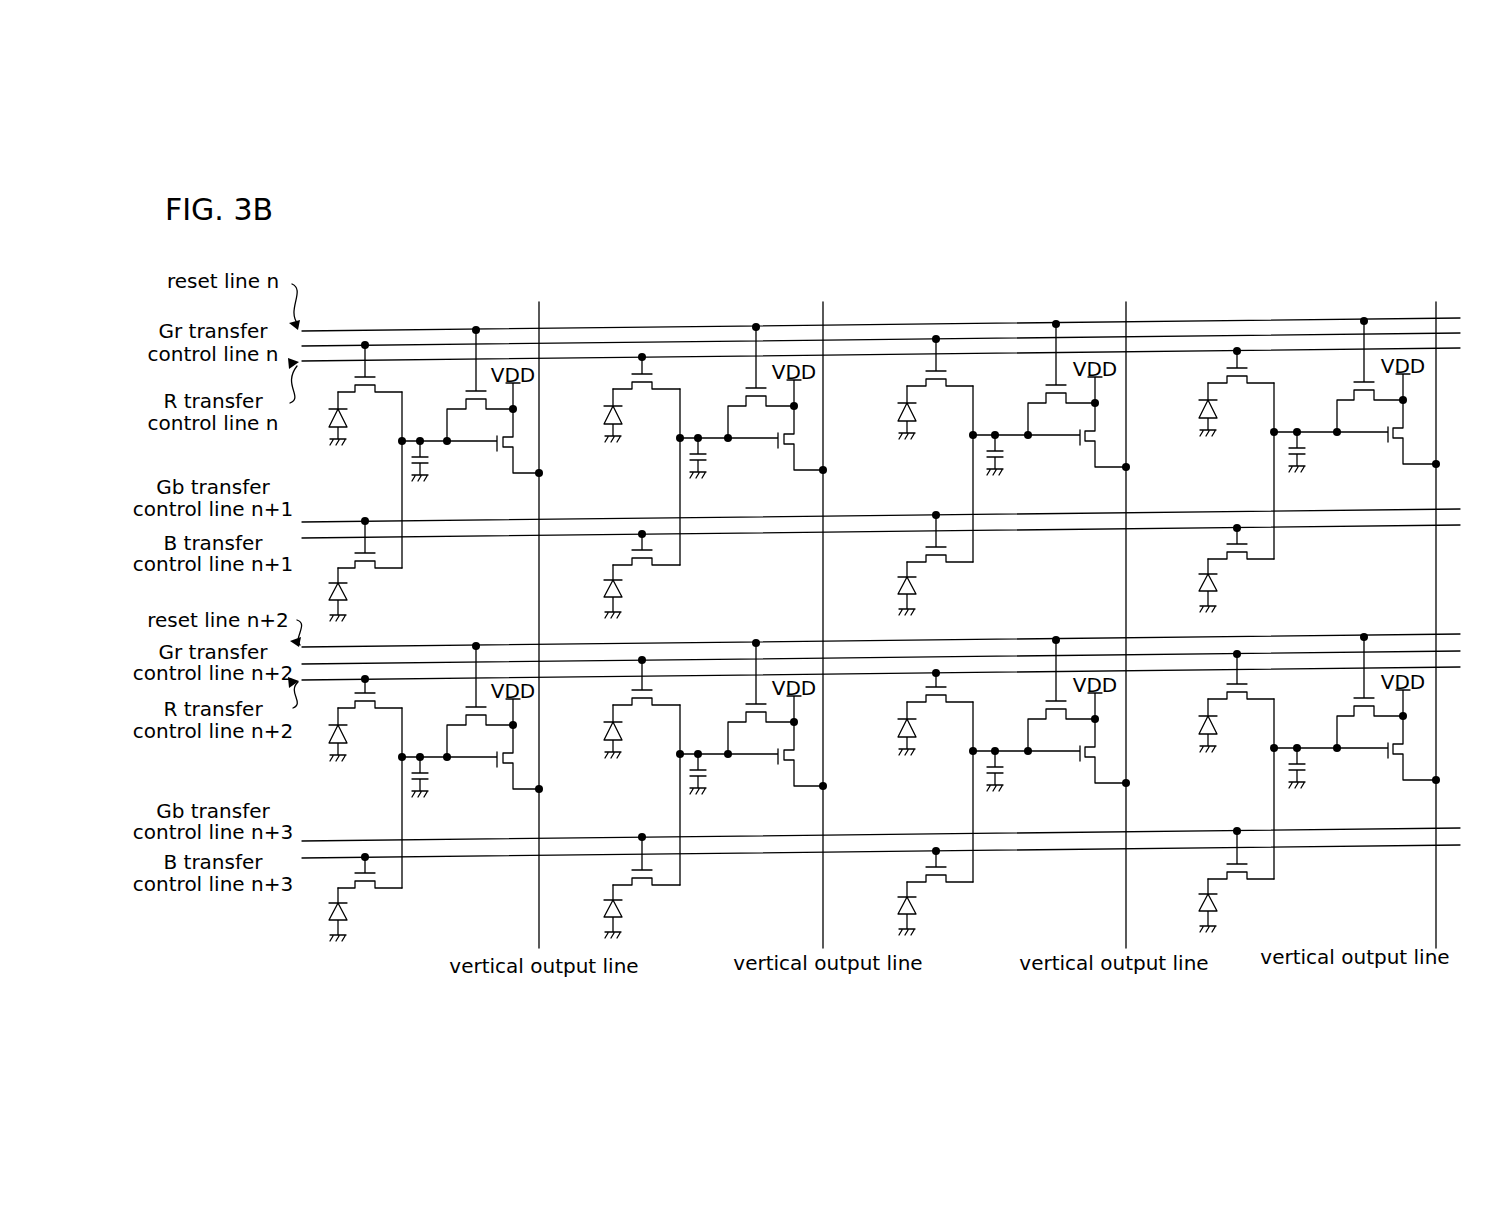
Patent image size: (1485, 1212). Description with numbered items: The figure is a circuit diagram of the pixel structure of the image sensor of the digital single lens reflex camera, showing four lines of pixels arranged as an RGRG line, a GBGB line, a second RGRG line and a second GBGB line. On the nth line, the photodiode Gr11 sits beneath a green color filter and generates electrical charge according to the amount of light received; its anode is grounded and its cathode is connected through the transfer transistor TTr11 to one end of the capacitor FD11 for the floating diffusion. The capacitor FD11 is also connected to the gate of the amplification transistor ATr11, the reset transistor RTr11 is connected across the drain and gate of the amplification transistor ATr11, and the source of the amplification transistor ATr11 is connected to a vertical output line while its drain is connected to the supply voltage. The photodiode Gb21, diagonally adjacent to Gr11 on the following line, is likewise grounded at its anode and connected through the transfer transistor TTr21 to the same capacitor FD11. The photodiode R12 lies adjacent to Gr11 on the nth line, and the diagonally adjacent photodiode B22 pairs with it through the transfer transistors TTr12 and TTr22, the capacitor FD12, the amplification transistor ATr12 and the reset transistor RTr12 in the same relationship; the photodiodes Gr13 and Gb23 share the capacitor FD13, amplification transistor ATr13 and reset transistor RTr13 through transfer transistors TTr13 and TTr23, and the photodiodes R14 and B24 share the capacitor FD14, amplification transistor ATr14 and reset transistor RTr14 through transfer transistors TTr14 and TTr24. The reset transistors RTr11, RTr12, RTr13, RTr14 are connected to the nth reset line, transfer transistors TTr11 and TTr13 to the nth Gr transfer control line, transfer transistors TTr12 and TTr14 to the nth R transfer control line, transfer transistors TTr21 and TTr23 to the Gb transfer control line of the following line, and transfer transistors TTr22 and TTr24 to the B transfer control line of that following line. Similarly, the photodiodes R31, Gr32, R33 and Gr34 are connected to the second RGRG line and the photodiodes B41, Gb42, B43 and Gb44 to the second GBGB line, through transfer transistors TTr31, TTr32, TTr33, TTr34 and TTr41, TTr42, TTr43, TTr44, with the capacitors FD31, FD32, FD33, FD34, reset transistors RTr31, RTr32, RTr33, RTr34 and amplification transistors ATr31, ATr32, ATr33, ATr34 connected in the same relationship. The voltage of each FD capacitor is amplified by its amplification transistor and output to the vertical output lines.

The transfer transistor TTr11 is at (374, 378).
The transfer transistor TTr12 is at (654, 371).
The transfer transistor TTr13 is at (947, 373).
The transfer transistor TTr14 is at (1249, 370).
The transfer transistor TTr21 is at (376, 553).
The transfer transistor TTr22 is at (633, 550).
The transfer transistor TTr23 is at (927, 548).
The transfer transistor TTr24 is at (1226, 547).
The transfer transistor TTr31 is at (374, 700).
The transfer transistor TTr32 is at (652, 691).
The transfer transistor TTr33 is at (947, 690).
The transfer transistor TTr34 is at (1248, 686).
The transfer transistor TTr41 is at (377, 870).
The transfer transistor TTr42 is at (630, 870).
The transfer transistor TTr43 is at (926, 868).
The transfer transistor TTr44 is at (1227, 868).
The reset transistor RTr11 is at (462, 392).
The reset transistor RTr12 is at (745, 394).
The reset transistor RTr13 is at (1044, 392).
The reset transistor RTr14 is at (1352, 390).
The reset transistor RTr31 is at (465, 708).
The reset transistor RTr32 is at (745, 710).
The reset transistor RTr33 is at (1044, 706).
The reset transistor RTr34 is at (1350, 704).
The amplification transistor ATr11 is at (498, 453).
The amplification transistor ATr12 is at (779, 450).
The amplification transistor ATr13 is at (1081, 447).
The amplification transistor ATr14 is at (1389, 444).
The amplification transistor ATr31 is at (498, 769).
The amplification transistor ATr32 is at (779, 766).
The amplification transistor ATr33 is at (1081, 763).
The amplification transistor ATr34 is at (1389, 760).
The capacitor for the FD (floating diffusion) FD11 is at (431, 460).
The FD capacitor FD12 is at (709, 457).
The FD capacitor FD13 is at (1006, 454).
The FD capacitor FD14 is at (1308, 451).
The FD capacitor FD31 is at (431, 777).
The FD capacitor FD32 is at (709, 773).
The FD capacitor FD33 is at (1006, 770).
The FD capacitor FD34 is at (1308, 767).
The photodiode Gr11 is at (348, 416).
The photodiode R12 is at (623, 413).
The photodiode Gr13 is at (917, 410).
The photodiode R14 is at (1218, 407).
The photodiode Gb21 is at (348, 592).
The photodiode B22 is at (623, 589).
The photodiode Gb23 is at (917, 587).
The photodiode B24 is at (1218, 581).
The photodiode R31 is at (348, 733).
The photodiode Gr32 is at (623, 730).
The photodiode R33 is at (917, 727).
The photodiode Gr34 is at (1218, 724).
The photodiode B41 is at (348, 913).
The photodiode Gb42 is at (623, 906).
The photodiode B43 is at (917, 904).
The photodiode Gb44 is at (1218, 903).